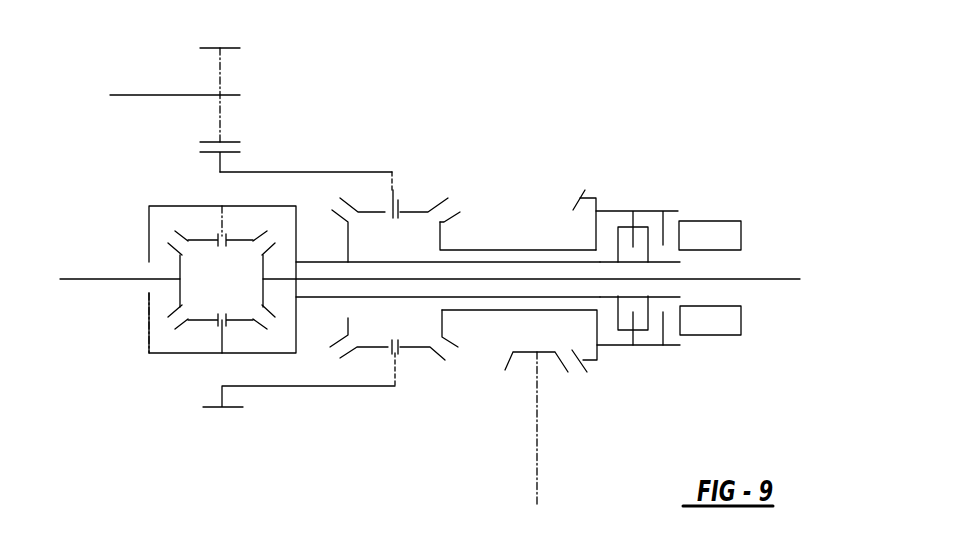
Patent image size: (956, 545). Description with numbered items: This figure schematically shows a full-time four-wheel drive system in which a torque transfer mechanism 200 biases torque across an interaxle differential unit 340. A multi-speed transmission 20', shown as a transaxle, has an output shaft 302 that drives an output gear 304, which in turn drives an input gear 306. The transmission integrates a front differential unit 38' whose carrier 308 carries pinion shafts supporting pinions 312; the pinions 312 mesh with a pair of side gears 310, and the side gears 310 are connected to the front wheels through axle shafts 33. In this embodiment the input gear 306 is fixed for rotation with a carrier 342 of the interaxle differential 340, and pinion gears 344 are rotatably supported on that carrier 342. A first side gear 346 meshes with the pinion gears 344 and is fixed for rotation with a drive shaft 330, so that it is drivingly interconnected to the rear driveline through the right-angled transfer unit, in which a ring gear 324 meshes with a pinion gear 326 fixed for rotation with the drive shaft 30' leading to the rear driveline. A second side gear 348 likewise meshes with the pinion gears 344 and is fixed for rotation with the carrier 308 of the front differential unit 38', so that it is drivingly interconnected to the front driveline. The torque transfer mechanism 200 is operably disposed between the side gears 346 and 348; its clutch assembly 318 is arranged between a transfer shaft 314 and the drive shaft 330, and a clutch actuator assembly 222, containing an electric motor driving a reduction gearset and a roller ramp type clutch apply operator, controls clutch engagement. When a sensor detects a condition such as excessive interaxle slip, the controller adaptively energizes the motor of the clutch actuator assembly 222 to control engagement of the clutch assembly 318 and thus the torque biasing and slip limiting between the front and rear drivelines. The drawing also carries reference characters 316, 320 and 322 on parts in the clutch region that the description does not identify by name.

The multi-speed transmission 20' is at (257, 103).
The drive shaft 30' is at (568, 429).
The axle shafts 33 is at (85, 278).
The front differential unit 38' is at (132, 399).
The torque transfer mechanism 200 is at (735, 100).
The clutch actuator assembly 222 is at (744, 229).
The output shaft 302 is at (146, 95).
The output gear 304 is at (233, 48).
The input gear 306 is at (237, 410).
The carrier 308 is at (170, 205).
The side gears 310 is at (263, 293).
The pinions 312 is at (230, 240).
The transfer shaft 314 is at (483, 298).
The hub 316 is at (640, 262).
The clutch assembly 318 is at (645, 206).
The housing 320 is at (673, 347).
The clutch plate 322 is at (626, 226).
The ring gear 324 is at (580, 192).
The pinion gear 326 is at (513, 362).
The drive shaft 330 is at (528, 248).
The interaxle differential unit 340 is at (424, 179).
The carrier 342 is at (305, 172).
The pinion gears 344 is at (379, 213).
The first side gear 346 is at (442, 232).
The second side gear 348 is at (348, 318).